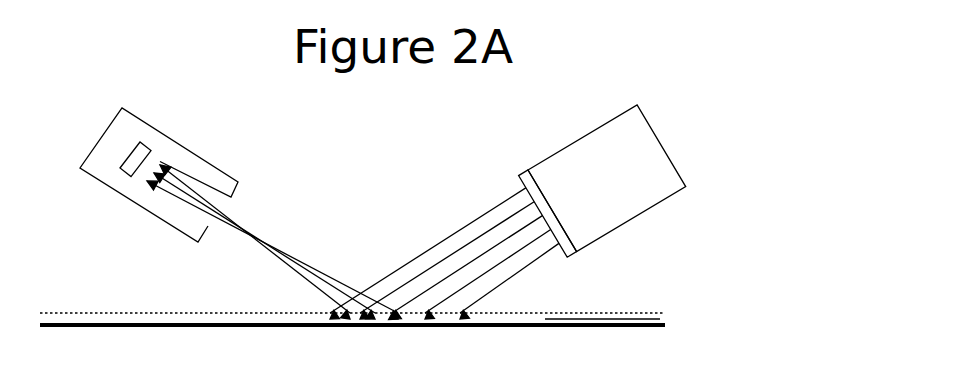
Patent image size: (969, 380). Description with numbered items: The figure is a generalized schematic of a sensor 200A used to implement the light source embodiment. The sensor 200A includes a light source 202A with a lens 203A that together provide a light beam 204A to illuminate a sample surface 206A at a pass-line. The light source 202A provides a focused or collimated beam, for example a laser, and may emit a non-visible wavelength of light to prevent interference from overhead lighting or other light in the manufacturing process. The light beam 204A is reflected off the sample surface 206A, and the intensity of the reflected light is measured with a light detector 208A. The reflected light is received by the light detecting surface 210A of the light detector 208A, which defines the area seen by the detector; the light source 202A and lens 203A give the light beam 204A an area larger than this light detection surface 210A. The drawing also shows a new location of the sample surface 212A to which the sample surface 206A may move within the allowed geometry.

The sensor 200A is at (668, 67).
The light source 202A is at (585, 143).
The lens 203A is at (537, 187).
The light beam 204A is at (463, 227).
The sample surface 206A is at (538, 298).
The light detector 208A is at (215, 162).
The light detection surface 210A is at (148, 142).
The substrate / sample stage 212A is at (563, 320).